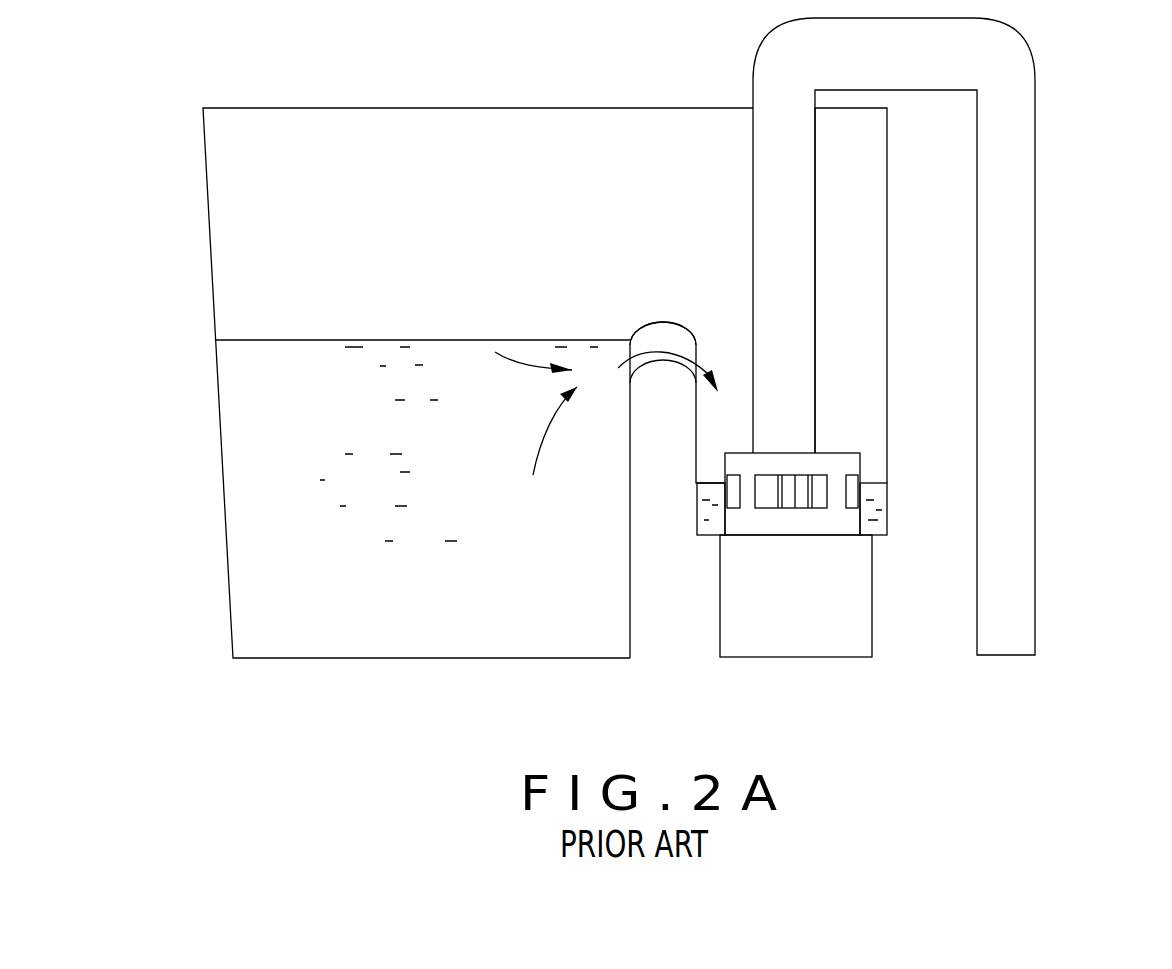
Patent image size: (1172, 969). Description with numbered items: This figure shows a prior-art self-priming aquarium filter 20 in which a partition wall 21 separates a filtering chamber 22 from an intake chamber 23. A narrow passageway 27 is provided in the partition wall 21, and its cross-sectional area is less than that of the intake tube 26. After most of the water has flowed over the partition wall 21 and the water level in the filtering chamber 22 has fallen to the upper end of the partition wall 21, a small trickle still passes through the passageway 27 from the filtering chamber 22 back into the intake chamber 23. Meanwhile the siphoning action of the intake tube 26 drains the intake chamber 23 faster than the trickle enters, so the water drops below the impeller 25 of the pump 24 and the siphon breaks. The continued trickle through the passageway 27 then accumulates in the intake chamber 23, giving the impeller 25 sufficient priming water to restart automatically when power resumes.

The aquarium tank 20 is at (200, 232).
The partition wall 21 is at (663, 365).
The filtering chamber 22 is at (245, 485).
The intake chamber 23 is at (875, 382).
The pump 24 is at (848, 607).
The impeller 25 is at (787, 492).
The intake tube 26 is at (1022, 348).
The passageway 27 is at (662, 333).